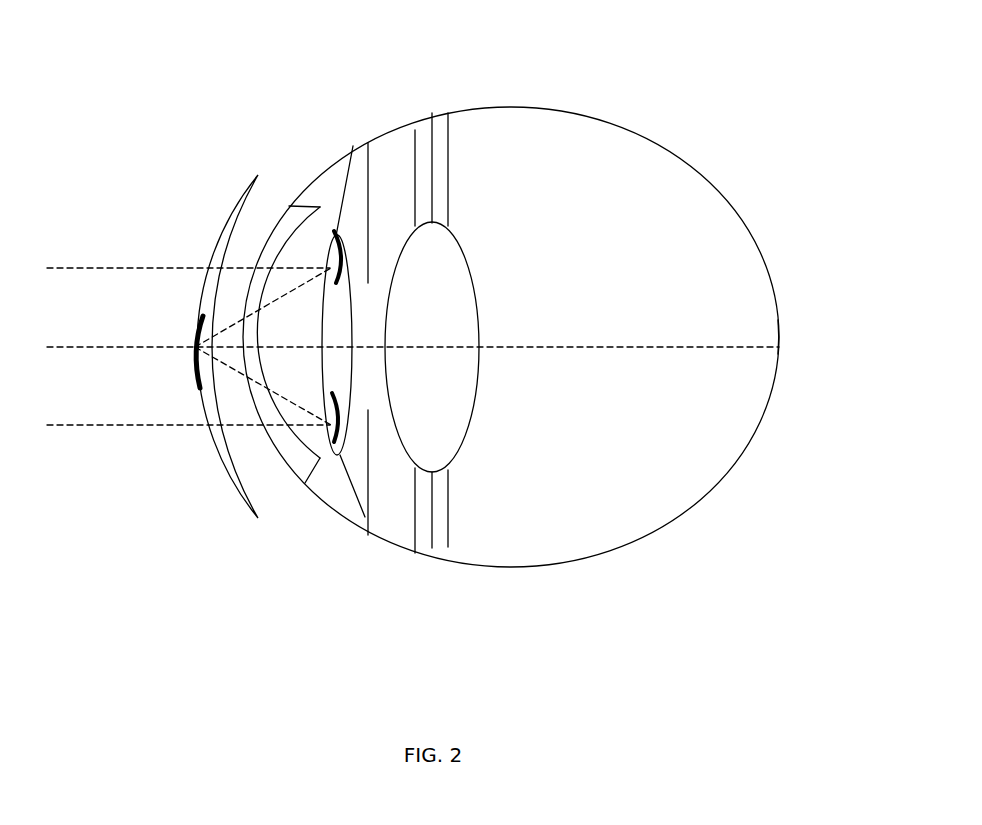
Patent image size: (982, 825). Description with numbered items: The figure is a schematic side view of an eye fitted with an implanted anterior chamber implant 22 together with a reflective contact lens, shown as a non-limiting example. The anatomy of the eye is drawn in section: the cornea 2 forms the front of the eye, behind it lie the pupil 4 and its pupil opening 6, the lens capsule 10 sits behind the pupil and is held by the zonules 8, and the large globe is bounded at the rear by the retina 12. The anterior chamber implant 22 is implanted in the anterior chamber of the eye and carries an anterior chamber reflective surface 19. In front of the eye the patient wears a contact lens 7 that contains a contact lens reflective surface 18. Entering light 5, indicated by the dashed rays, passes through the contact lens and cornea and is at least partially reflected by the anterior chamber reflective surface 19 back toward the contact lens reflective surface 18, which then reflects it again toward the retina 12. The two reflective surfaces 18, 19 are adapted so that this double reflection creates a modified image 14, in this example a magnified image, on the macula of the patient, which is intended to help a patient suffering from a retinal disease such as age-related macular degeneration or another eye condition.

The cornea 2 is at (302, 469).
The pupil 4 is at (374, 487).
The entering light 5 is at (96, 437).
The pupil opening 6 is at (374, 393).
The contact lens 7 is at (216, 213).
The zonules 8 is at (457, 511).
The lens capsule 10 is at (441, 411).
The retina 12 is at (708, 172).
The modified image 14 is at (785, 327).
The contact lens reflective surface 18 is at (187, 321).
The anterior chamber reflective surface 19 is at (341, 222).
The anterior chamber implant 22 is at (344, 303).